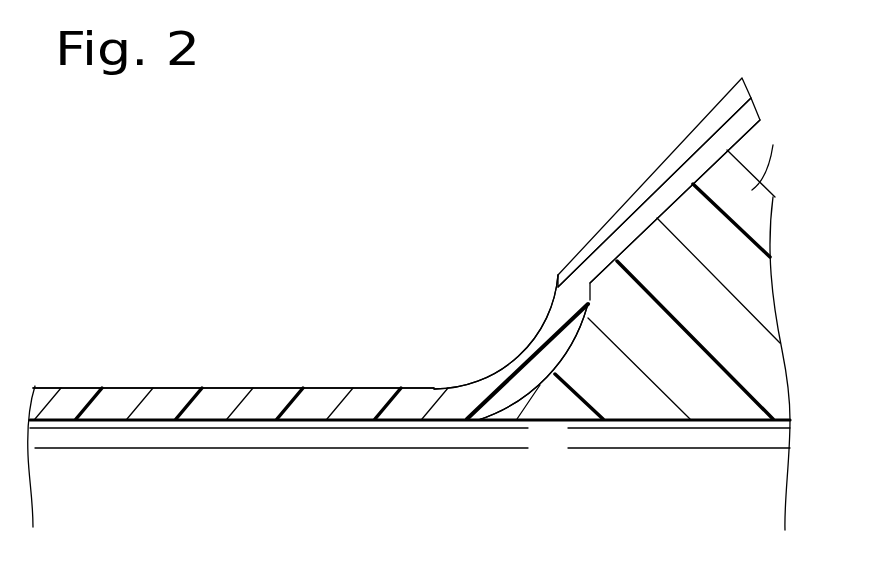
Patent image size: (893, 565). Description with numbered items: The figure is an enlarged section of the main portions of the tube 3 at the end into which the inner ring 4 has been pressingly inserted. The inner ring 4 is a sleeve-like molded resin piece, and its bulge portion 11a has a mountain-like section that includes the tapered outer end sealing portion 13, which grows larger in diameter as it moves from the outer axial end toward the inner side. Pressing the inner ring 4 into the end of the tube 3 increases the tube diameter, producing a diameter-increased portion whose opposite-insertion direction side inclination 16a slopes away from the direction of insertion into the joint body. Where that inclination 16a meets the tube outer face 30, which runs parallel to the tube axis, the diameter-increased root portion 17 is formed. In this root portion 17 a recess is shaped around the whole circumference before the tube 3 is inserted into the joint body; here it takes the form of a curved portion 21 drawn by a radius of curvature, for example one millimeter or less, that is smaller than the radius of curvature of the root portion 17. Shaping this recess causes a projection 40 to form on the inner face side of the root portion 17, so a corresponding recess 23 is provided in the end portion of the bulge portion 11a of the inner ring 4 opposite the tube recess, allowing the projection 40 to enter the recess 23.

The tube 3 is at (77, 386).
The tube outer face 30 is at (230, 387).
The diameter-increased root portion 17 is at (525, 385).
The curved portion 21 is at (539, 352).
The recess 23 is at (576, 338).
The projection 40 is at (547, 389).
The bulge portion 11a is at (655, 263).
The opposite-insertion direction side inclination 16a is at (671, 160).
The outer end sealing portion 13 is at (710, 158).
The inner ring 4 is at (773, 197).